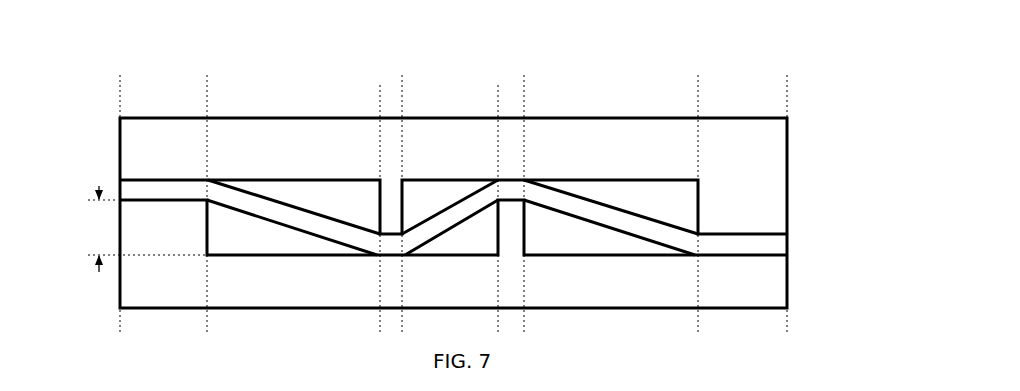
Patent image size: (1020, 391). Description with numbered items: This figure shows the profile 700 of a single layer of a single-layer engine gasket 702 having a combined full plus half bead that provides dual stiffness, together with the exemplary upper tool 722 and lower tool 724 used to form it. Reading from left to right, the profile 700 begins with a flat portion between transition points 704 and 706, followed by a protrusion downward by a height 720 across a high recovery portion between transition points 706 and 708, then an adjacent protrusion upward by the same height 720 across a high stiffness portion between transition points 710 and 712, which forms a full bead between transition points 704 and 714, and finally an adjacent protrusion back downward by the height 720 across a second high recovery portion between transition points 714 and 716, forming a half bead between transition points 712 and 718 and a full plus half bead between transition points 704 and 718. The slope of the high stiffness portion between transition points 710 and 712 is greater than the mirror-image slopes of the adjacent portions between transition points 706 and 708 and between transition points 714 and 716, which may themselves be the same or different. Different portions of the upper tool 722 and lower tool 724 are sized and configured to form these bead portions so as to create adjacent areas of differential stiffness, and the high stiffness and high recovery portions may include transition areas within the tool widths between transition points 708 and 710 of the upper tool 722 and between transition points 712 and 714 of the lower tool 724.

The profile 700 is at (812, 75).
The single-layer engine gasket 702 is at (780, 246).
The transition point 704 is at (120, 97).
The transition point 706 is at (207, 97).
The transition point 708 is at (381, 85).
The transition point 710 is at (402, 97).
The transition point 712 is at (499, 85).
The transition point 714 is at (524, 97).
The transition point 716 is at (698, 97).
The transition point 718 is at (787, 97).
The height 720 is at (99, 186).
The upper tool 722 is at (747, 145).
The lower tool 724 is at (749, 281).